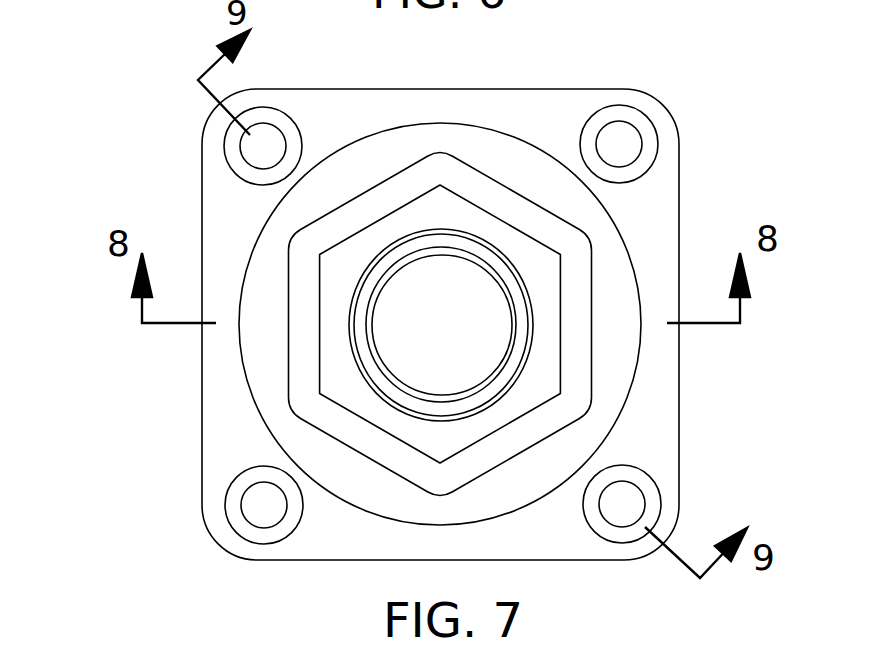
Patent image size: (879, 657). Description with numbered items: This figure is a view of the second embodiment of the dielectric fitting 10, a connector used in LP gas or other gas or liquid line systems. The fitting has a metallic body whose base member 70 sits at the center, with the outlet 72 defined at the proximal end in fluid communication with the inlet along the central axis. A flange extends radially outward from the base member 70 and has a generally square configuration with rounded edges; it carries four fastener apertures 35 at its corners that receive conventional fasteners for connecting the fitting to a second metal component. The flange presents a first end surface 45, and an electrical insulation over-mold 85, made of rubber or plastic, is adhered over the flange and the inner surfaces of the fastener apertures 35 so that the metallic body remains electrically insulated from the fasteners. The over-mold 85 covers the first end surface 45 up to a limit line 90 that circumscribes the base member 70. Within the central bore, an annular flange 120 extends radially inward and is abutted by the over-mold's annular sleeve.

The dielectric fitting 10 is at (147, 153).
The fastener apertures 35 is at (630, 142).
The first end surface 45 is at (613, 382).
The base member 70 is at (425, 215).
The outlet 72 is at (468, 301).
The electrical insulation over-mold 85 is at (803, 146).
The limit line 90 is at (545, 150).
The annular flange 120 is at (375, 328).